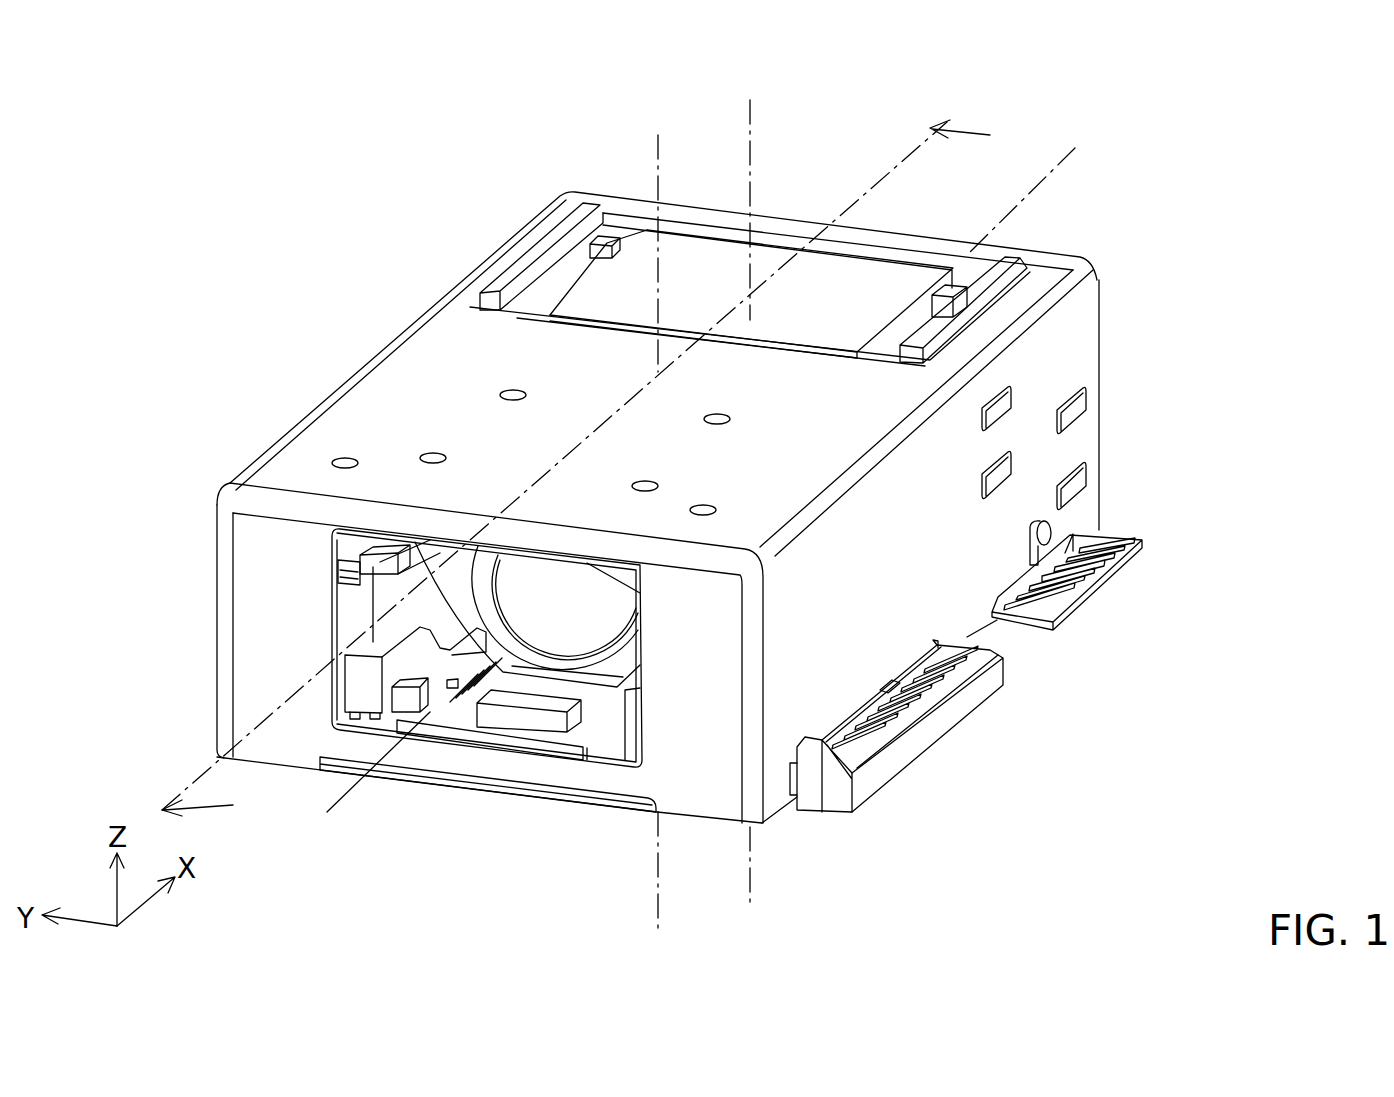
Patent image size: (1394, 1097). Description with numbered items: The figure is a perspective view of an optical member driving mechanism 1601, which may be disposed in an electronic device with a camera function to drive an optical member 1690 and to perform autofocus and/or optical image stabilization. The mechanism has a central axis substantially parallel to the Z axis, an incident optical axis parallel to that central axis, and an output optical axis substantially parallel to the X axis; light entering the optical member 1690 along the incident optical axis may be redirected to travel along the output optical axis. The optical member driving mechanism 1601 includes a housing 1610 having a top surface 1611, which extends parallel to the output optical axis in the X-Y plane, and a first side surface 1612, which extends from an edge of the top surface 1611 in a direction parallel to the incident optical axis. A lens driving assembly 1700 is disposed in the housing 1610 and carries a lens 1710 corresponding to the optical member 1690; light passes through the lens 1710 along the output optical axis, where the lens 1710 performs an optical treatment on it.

The optical member driving mechanism 1601 is at (275, 88).
The housing 1610 is at (487, 257).
The top surface 1611 is at (425, 398).
The first side surface 1612 is at (693, 712).
The optical member 1690 is at (872, 282).
The lens driving assembly 1700 is at (473, 627).
The lens 1710 is at (547, 588).